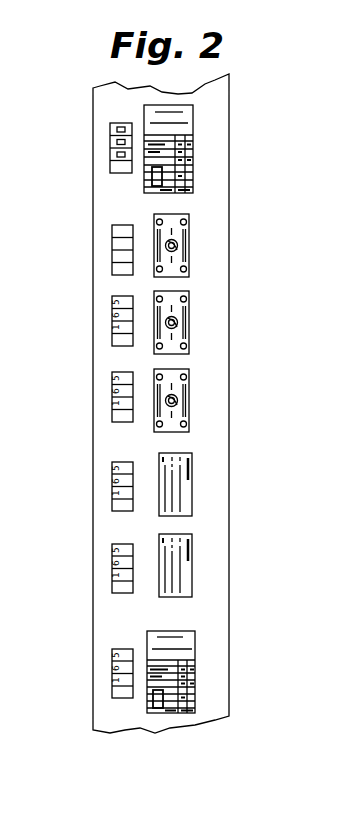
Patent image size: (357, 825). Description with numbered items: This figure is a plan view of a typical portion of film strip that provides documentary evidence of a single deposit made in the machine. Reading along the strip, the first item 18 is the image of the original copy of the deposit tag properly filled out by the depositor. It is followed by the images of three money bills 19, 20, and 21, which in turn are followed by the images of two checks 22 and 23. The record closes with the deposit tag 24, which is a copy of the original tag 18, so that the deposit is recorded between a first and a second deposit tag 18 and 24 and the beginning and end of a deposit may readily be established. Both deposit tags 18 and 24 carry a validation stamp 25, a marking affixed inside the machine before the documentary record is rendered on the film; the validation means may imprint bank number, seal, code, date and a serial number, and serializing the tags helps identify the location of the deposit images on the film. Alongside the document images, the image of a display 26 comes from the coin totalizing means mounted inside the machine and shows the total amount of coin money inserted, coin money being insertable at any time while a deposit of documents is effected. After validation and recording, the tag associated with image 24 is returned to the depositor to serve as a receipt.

The first item 18 is at (193, 155).
The money bill 19 is at (189, 250).
The money bill 20 is at (189, 328).
The money bill 21 is at (189, 405).
The check 22 is at (192, 497).
The check 23 is at (192, 578).
The deposit tag 24 is at (195, 690).
The validation stamp 25 is at (158, 187).
The image of a display 26 is at (110, 253).